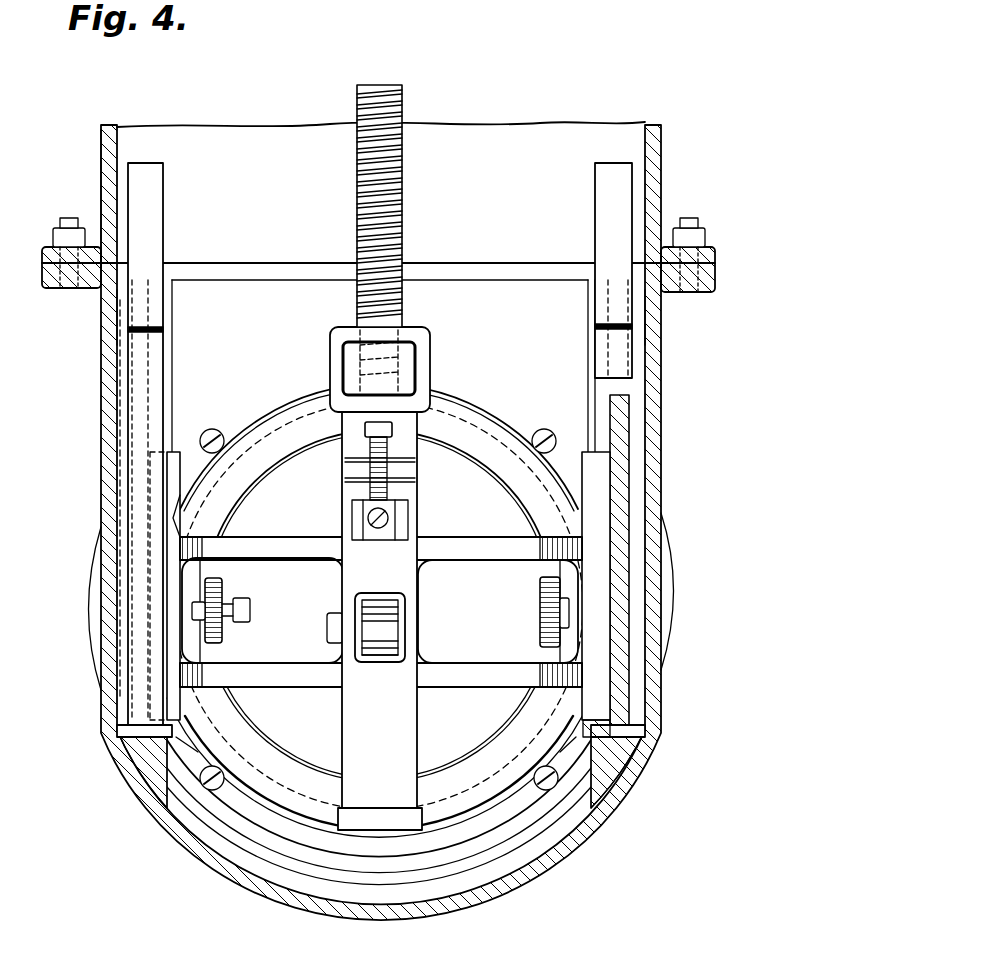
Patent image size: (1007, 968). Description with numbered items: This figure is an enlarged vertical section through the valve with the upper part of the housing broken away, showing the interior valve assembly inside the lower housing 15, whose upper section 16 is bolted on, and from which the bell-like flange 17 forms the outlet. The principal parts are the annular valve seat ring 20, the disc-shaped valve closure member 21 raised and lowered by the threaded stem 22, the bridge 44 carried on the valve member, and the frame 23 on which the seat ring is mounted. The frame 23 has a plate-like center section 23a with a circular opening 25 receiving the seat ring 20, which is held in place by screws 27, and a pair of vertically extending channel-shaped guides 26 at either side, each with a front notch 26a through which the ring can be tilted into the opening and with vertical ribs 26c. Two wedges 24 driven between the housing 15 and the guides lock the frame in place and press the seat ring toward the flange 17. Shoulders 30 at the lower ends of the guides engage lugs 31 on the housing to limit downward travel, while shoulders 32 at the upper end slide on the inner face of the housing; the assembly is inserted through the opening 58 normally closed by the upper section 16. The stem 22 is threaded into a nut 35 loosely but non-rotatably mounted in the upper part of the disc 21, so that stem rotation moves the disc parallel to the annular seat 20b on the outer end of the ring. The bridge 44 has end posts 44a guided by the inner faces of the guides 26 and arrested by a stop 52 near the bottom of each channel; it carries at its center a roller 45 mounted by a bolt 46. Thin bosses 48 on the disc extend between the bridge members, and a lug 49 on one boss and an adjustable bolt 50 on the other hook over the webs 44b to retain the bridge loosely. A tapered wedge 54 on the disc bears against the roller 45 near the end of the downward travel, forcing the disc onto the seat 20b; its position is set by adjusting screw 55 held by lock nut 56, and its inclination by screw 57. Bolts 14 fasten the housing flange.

The flange bolts 14 is at (68, 228).
The housing 15 is at (228, 874).
The upper housing section 16 is at (100, 143).
The bell-like flange 17 is at (90, 620).
The valve seat ring 20 is at (283, 403).
The annular seat 20b is at (332, 383).
The valve closure member 21 is at (482, 447).
The stem 22 is at (405, 108).
The frame 23 is at (496, 296).
The plate-like center section 23a is at (540, 292).
The wedges 24 is at (152, 201).
The circular opening 25 is at (462, 395).
The guides 26 is at (125, 430).
The notch 26a is at (178, 520).
The ribs 26c is at (165, 345).
The screws 27 is at (216, 430).
The shoulders 30 is at (135, 737).
The lugs 31 is at (130, 758).
The shoulder 32 is at (122, 312).
The nut 35 is at (412, 362).
The bridge 44 is at (319, 694).
The post-like members 44a is at (176, 470).
The web portions 44b is at (200, 566).
The roller 45 is at (380, 665).
The bolt 46 is at (328, 636).
The boss 48 is at (222, 626).
The lug 49 is at (568, 612).
The screw 50 is at (248, 612).
The stop 52 is at (382, 750).
The tapered wedge 54 is at (408, 522).
The adjusting screw 55 is at (368, 440).
The lock nut 56 is at (392, 448).
The screw 57 is at (388, 515).
The opening 58 is at (690, 292).